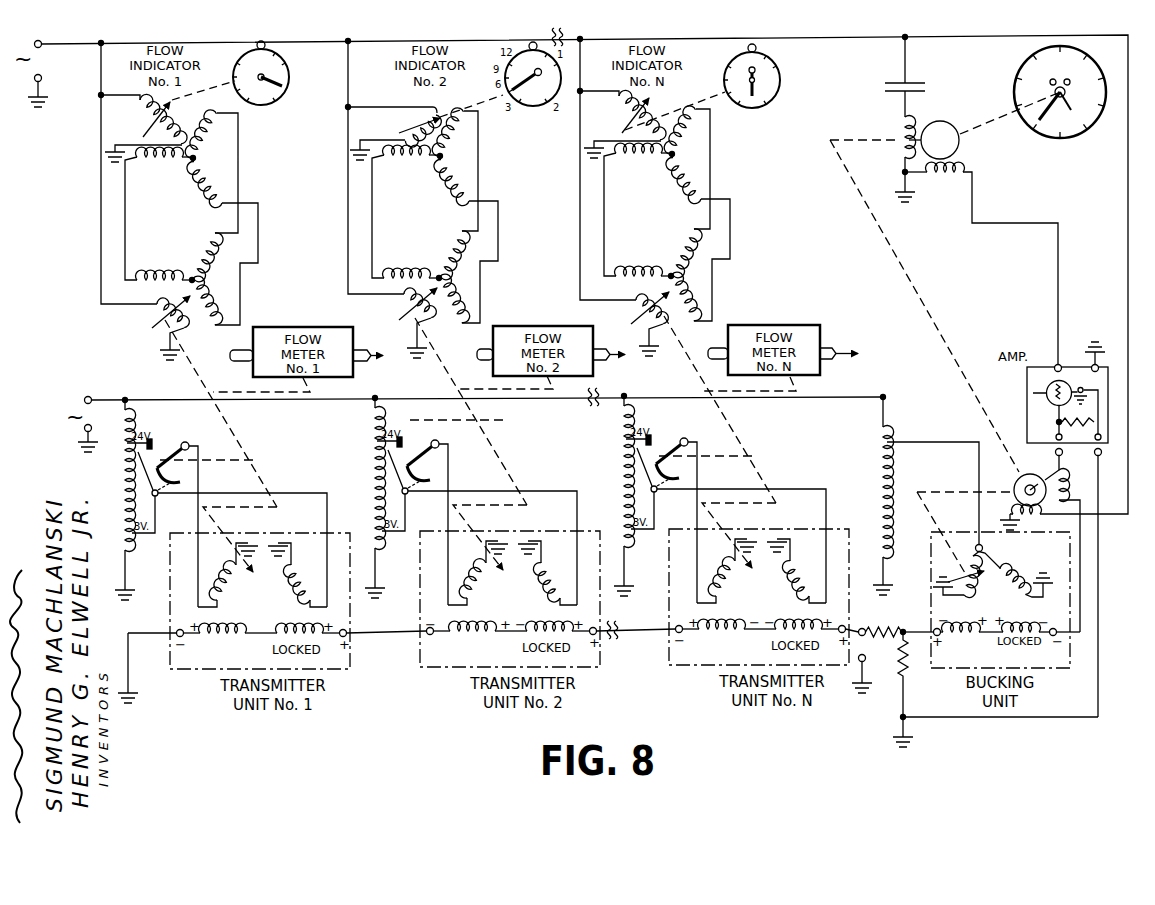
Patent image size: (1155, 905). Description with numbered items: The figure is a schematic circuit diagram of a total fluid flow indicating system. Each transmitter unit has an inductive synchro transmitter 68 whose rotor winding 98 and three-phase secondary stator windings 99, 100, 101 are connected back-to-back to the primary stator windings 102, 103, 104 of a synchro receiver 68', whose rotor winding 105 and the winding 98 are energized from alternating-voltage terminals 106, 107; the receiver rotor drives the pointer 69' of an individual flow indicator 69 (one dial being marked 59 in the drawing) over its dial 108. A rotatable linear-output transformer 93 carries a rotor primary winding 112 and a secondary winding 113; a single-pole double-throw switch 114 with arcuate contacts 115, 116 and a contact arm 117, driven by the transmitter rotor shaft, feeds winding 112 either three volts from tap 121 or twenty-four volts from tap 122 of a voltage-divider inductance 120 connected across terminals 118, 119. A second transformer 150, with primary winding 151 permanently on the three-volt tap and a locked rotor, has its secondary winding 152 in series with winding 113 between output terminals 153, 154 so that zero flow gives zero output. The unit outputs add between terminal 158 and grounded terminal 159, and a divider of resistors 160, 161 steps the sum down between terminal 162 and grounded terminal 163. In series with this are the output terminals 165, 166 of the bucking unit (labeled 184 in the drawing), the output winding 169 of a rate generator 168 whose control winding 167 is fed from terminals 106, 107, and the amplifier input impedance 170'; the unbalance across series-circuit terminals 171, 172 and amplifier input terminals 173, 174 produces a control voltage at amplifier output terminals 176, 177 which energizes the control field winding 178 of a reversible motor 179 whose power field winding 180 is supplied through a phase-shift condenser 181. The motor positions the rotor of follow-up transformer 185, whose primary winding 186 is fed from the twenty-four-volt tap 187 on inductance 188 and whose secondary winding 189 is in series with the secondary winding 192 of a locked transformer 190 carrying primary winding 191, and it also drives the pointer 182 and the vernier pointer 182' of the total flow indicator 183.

The flow indicator dial (misprint of 69) 59 is at (768, 85).
The inductive synchro transmitter device 68 is at (191, 232).
The inductive synchro receiver device 68' is at (178, 182).
The flow indicator 69 is at (277, 76).
The indicator pointer 69' is at (292, 79).
The rotatable linear-output transformer 93 is at (262, 579).
The rotor winding 98 is at (156, 310).
The three-phase secondary stator winding 99 is at (156, 278).
The three-phase secondary stator winding 100 is at (217, 300).
The three-phase secondary stator winding 101 is at (218, 258).
The three-phase primary stator winding 102 is at (160, 169).
The three-phase primary stator winding 103 is at (205, 200).
The three-phase primary stator winding 104 is at (213, 137).
The rotor winding 105 is at (142, 112).
The terminal 106 is at (36, 41).
The terminal 107 is at (41, 80).
The flow indicator scale 108 is at (283, 82).
The primary winding 112 is at (216, 576).
The secondary winding 113 is at (217, 640).
The automatic switching mechanism 114 is at (213, 455).
The arcuate electrical contact 115 is at (182, 481).
The arcuate electrical contact 116 is at (152, 440).
The electrical contact arm 117 is at (187, 442).
The terminal 118 is at (87, 397).
The terminal 119 is at (103, 433).
The inductance 120 is at (122, 480).
The tap 121 is at (134, 536).
The tap 122 is at (140, 466).
The additional rotatable linear-output transformer 150 is at (297, 592).
The primary winding 151 is at (302, 578).
The secondary winding 152 is at (282, 640).
The output terminal 153 is at (177, 630).
The output terminal 154 is at (346, 630).
The terminal 158 is at (866, 637).
The grounded terminal 159 is at (866, 668).
The resistor 160 is at (868, 632).
The resistor 161 is at (907, 667).
The terminal 162 is at (904, 628).
The grounded terminal 163 is at (900, 718).
The output terminal 165 is at (946, 636).
The output terminal 166 is at (1055, 637).
The control winding 167 is at (1013, 511).
The rate generator 168 is at (1016, 478).
The output winding 169 is at (1056, 471).
The resistance 170' is at (1043, 402).
The output terminal 171 is at (1096, 456).
The output terminal 172 is at (1079, 551).
The terminal 173 is at (1059, 423).
The terminal 174 is at (1094, 437).
The output terminal 176 is at (1056, 362).
The output terminal 177 is at (1093, 362).
The control field winding 178 is at (946, 178).
The reversible motor 179 is at (959, 144).
The power field winding 180 is at (902, 132).
The phase-shift condenser 181 is at (915, 86).
The pointer 182 is at (1085, 111).
The second pointer 182' is at (1037, 118).
The total flow indicator 183 is at (1049, 108).
The bucking unit stator 184 is at (982, 548).
The rotatable linear-output transformer 185 is at (962, 545).
The primary winding 186 is at (965, 591).
The twenty-four-volt tap 187 is at (889, 446).
The inductance 188 is at (877, 476).
The secondary winding 189 is at (973, 641).
The second rotatable linear-output transformer 190 is at (1020, 566).
The primary winding 191 is at (1026, 574).
The secondary winding 192 is at (1040, 630).